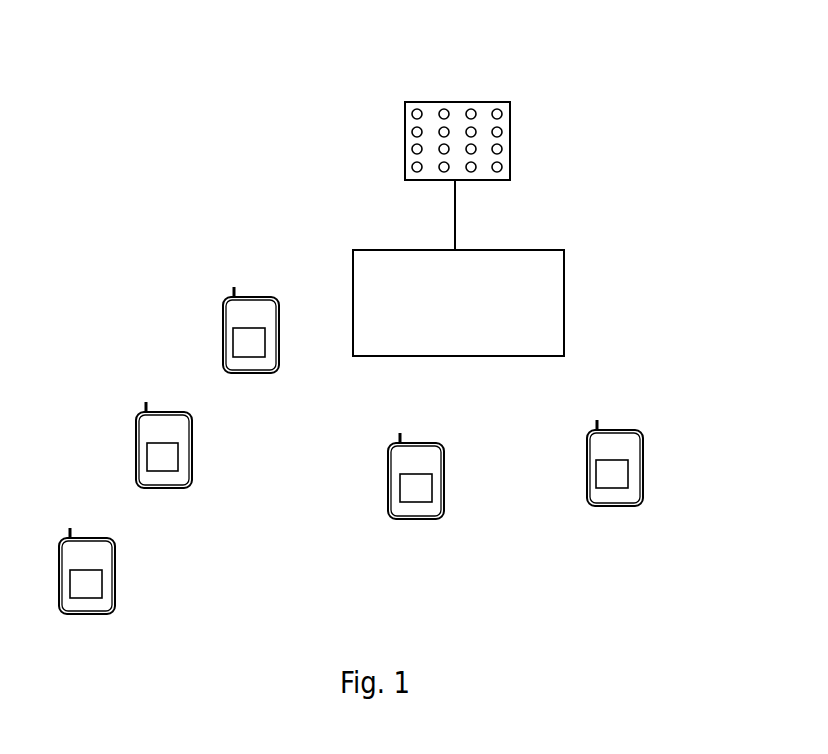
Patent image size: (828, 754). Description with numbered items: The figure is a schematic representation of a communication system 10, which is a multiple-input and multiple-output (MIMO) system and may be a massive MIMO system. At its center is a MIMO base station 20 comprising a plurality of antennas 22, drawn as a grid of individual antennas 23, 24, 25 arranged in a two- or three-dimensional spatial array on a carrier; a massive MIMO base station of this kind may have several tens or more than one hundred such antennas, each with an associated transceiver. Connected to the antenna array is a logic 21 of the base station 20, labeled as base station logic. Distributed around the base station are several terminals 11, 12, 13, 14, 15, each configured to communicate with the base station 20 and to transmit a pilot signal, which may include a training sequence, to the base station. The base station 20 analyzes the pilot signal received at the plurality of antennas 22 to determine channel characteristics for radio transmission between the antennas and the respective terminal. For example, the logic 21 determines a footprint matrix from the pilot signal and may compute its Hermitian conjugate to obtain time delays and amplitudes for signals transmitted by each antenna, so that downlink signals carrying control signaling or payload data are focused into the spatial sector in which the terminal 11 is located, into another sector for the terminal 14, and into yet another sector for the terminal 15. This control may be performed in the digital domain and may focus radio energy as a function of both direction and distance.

The communication system 10 is at (84, 34).
The terminal 11 is at (224, 369).
The terminal 12 is at (138, 486).
The terminal 13 is at (60, 613).
The terminal 14 is at (390, 517).
The terminal 15 is at (587, 503).
The MIMO base station 20 is at (306, 94).
The logic 21 is at (565, 356).
The plurality of antennas 22 is at (456, 159).
The antenna 23 is at (502, 171).
The antenna 24 is at (503, 151).
The antenna 25 is at (503, 130).